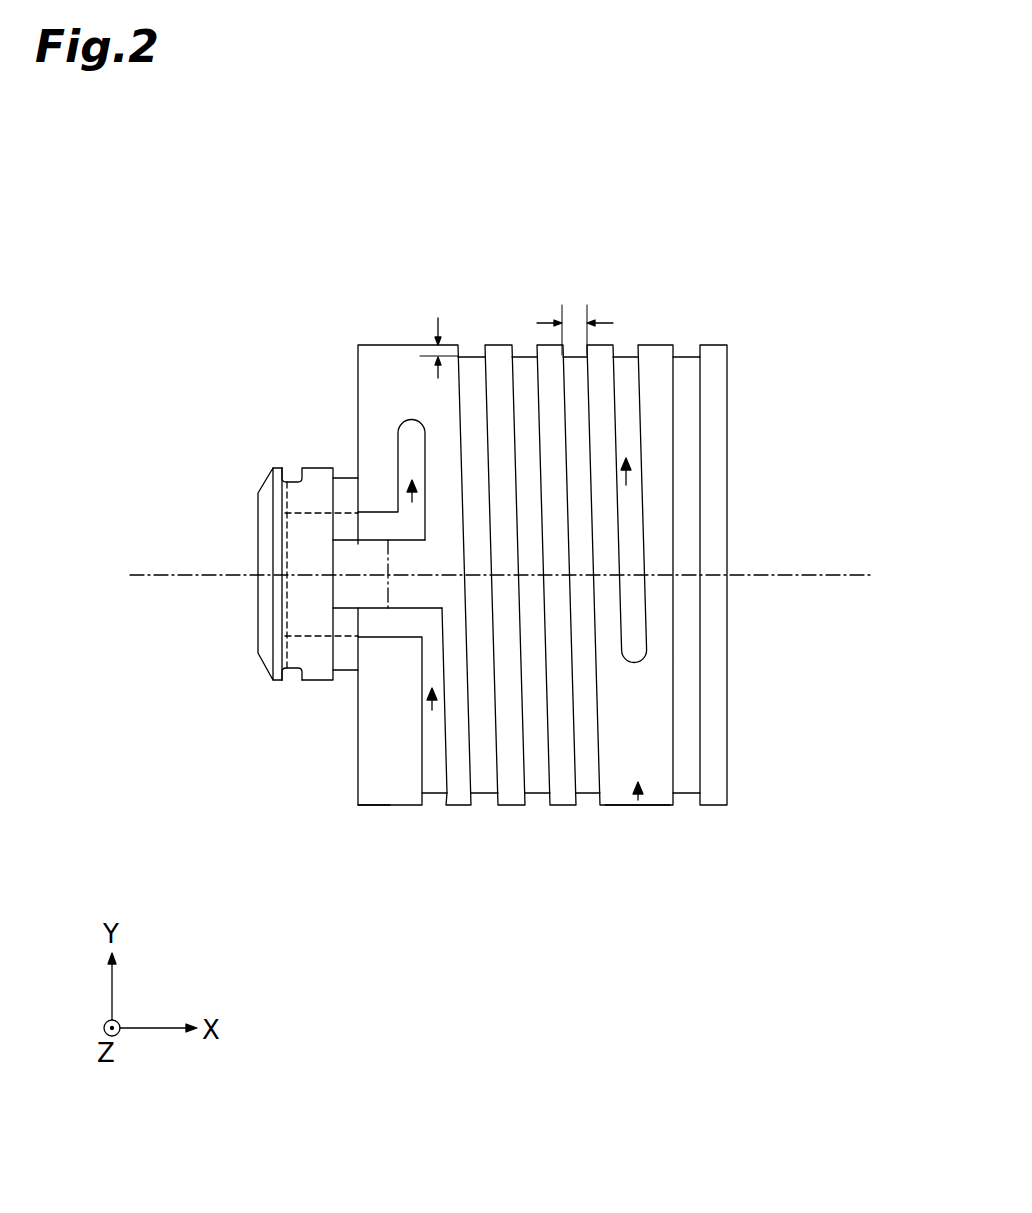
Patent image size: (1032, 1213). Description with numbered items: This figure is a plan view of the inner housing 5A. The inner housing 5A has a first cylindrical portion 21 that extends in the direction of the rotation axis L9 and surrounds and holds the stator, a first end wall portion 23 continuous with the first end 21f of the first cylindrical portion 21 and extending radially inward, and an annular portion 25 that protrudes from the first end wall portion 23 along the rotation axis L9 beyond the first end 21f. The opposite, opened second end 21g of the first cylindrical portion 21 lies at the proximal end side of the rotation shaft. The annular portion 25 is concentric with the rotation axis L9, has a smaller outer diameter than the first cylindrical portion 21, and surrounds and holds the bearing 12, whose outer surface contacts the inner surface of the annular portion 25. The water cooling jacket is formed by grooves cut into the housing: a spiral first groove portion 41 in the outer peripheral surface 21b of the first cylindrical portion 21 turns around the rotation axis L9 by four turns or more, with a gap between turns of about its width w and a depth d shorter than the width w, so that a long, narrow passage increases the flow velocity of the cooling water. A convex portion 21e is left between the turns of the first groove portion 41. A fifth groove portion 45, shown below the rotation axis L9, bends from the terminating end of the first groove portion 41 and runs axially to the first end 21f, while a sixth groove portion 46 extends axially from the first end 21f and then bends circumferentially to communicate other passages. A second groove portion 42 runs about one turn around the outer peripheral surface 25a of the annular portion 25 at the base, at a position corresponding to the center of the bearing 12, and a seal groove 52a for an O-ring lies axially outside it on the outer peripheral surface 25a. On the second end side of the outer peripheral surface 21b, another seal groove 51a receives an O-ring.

The inner housing 5A is at (284, 236).
The bearing 12 is at (268, 628).
The first cylindrical portion 21 is at (651, 360).
The outer peripheral surface 21b is at (637, 808).
The convex portion 21e is at (547, 348).
The first end 21f is at (357, 796).
The second end 21g is at (733, 796).
The first end wall portion 23 is at (357, 387).
The annular portion 25 is at (268, 500).
The outer peripheral surface 25a is at (315, 681).
The first groove portion 41 is at (533, 791).
The second groove portion 42 is at (345, 672).
The fifth groove portion 45 is at (398, 641).
The sixth groove portion 46 is at (407, 466).
The seal groove 51a is at (689, 672).
The seal groove 52a is at (293, 478).
The rotation axis L9 is at (840, 562).
The depth d is at (433, 345).
The width w is at (573, 318).